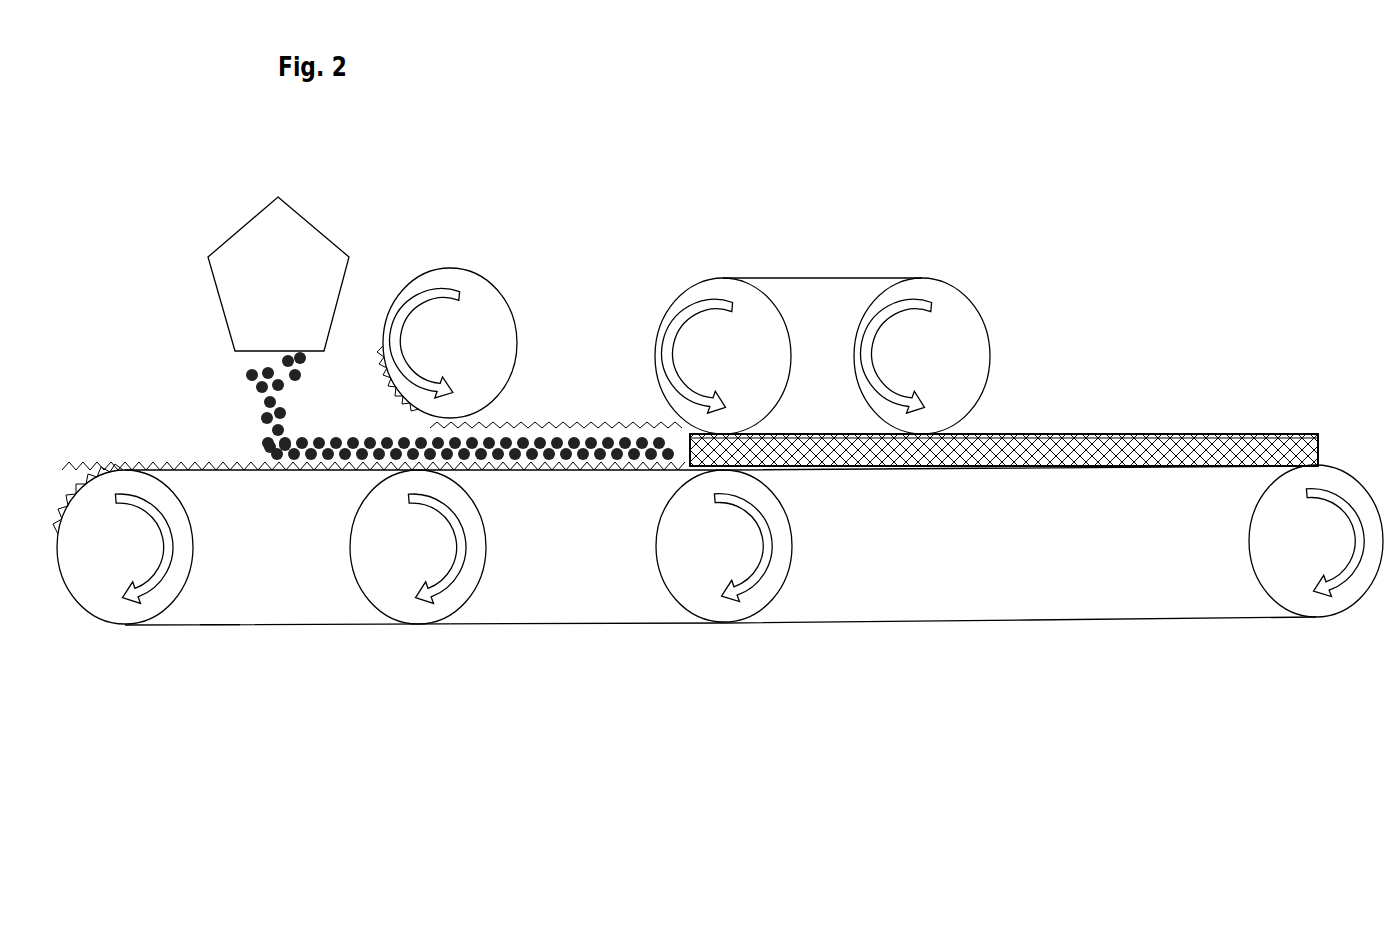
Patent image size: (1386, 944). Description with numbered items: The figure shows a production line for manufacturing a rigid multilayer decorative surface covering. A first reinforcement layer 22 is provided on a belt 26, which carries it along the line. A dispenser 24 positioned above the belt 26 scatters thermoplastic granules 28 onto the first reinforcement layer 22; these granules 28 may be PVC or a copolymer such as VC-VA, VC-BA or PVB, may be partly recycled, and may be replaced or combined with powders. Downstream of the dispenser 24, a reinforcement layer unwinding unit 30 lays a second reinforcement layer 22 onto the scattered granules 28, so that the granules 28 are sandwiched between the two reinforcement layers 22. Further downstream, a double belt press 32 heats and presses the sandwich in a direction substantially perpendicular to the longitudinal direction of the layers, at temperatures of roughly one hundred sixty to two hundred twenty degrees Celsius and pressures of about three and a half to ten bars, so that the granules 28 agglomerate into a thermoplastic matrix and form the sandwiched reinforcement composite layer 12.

The sandwiched reinforcement composite layer 12 is at (1303, 433).
The reinforcement layer 22 is at (147, 465).
The dispenser 24 is at (242, 212).
The belt 26 is at (218, 626).
The thermoplastic granules 28 is at (245, 372).
The reinforcement layer unwinding unit 30 is at (445, 265).
The double belt press 32 is at (730, 270).